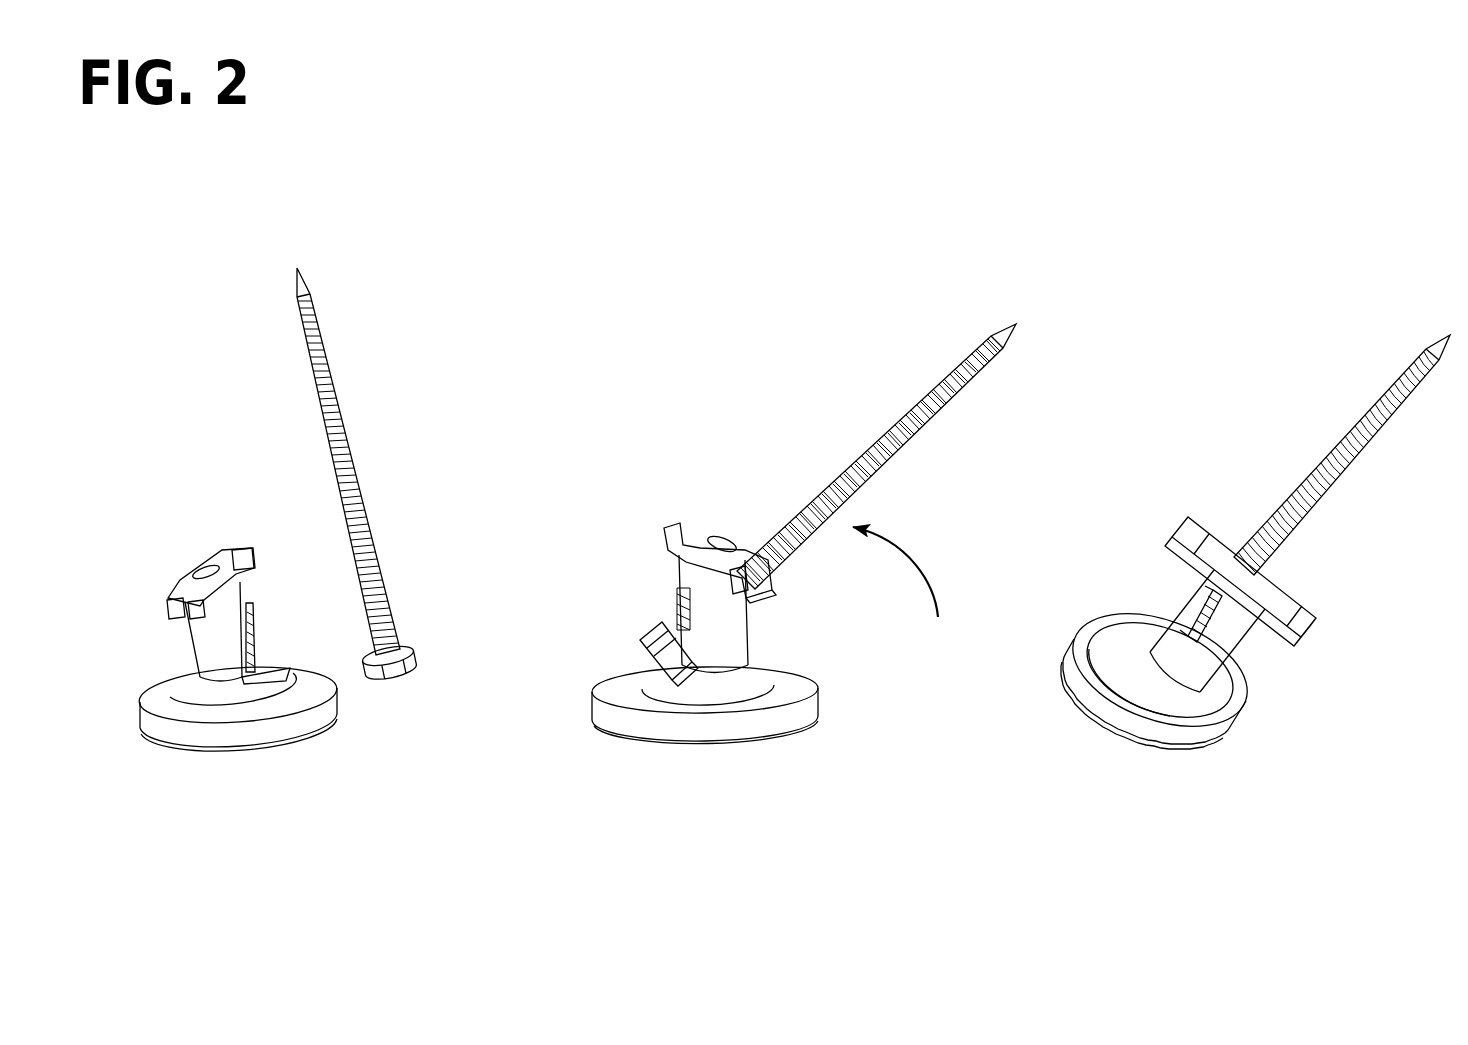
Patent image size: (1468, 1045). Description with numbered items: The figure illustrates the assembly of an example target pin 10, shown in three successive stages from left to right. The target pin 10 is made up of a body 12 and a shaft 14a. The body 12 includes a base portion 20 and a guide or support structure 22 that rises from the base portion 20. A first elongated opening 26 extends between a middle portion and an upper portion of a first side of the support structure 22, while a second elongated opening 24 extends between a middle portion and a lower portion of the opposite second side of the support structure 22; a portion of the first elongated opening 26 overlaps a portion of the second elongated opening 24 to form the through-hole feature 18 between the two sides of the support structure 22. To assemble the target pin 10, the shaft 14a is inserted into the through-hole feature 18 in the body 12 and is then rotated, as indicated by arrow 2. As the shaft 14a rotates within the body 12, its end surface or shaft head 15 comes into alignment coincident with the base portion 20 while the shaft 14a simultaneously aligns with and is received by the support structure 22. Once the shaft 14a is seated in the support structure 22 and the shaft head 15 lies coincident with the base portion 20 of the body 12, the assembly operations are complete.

The arrow 2 is at (918, 556).
The target pin 10 is at (230, 308).
The body 12 is at (705, 545).
The shaft 14a is at (333, 372).
The shaft head 15 is at (404, 662).
The through-hole feature 18 is at (267, 602).
The base portion 20 is at (216, 742).
The support structure 22 is at (748, 634).
The second elongated opening 24 is at (274, 658).
The first elongated opening 26 is at (190, 570).